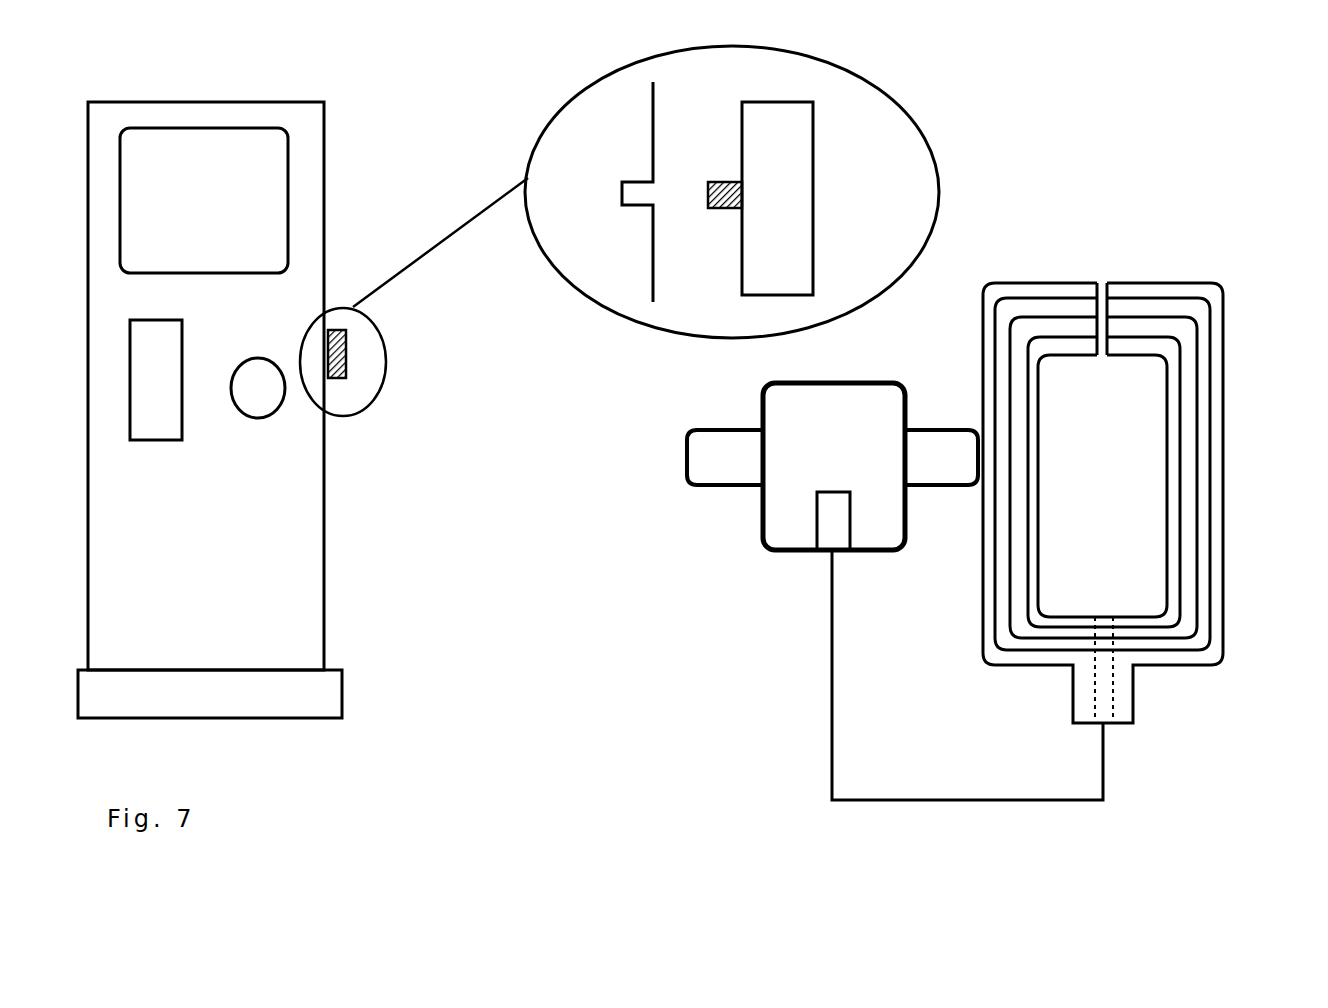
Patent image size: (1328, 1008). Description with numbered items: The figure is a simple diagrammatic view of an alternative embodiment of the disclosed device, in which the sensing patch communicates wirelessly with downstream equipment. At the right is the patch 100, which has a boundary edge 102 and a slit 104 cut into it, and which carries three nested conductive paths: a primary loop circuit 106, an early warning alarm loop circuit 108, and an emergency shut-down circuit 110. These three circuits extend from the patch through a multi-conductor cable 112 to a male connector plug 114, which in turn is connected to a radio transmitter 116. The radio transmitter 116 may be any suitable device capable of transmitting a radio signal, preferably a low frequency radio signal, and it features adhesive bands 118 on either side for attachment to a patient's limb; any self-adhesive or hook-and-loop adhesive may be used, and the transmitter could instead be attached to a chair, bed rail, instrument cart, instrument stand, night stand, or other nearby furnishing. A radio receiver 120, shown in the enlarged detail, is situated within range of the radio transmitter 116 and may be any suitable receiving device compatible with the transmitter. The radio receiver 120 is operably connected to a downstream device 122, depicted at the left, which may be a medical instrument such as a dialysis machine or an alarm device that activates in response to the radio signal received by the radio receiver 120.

The patch 100 is at (1152, 489).
The boundary edge 102 is at (1232, 507).
The slit 104 is at (1100, 278).
The primary loop circuit 106 is at (1214, 296).
The early warning alarm loop circuit 108 is at (1200, 333).
The emergency shut-down circuit 110 is at (1184, 393).
The multi-conductor cable 112 is at (1051, 696).
The male connector plug 114 is at (859, 568).
The radio transmitter 116 is at (834, 374).
The adhesive bands 118 is at (676, 452).
The radio receiver 120 is at (947, 182).
The downstream device 122 is at (257, 393).